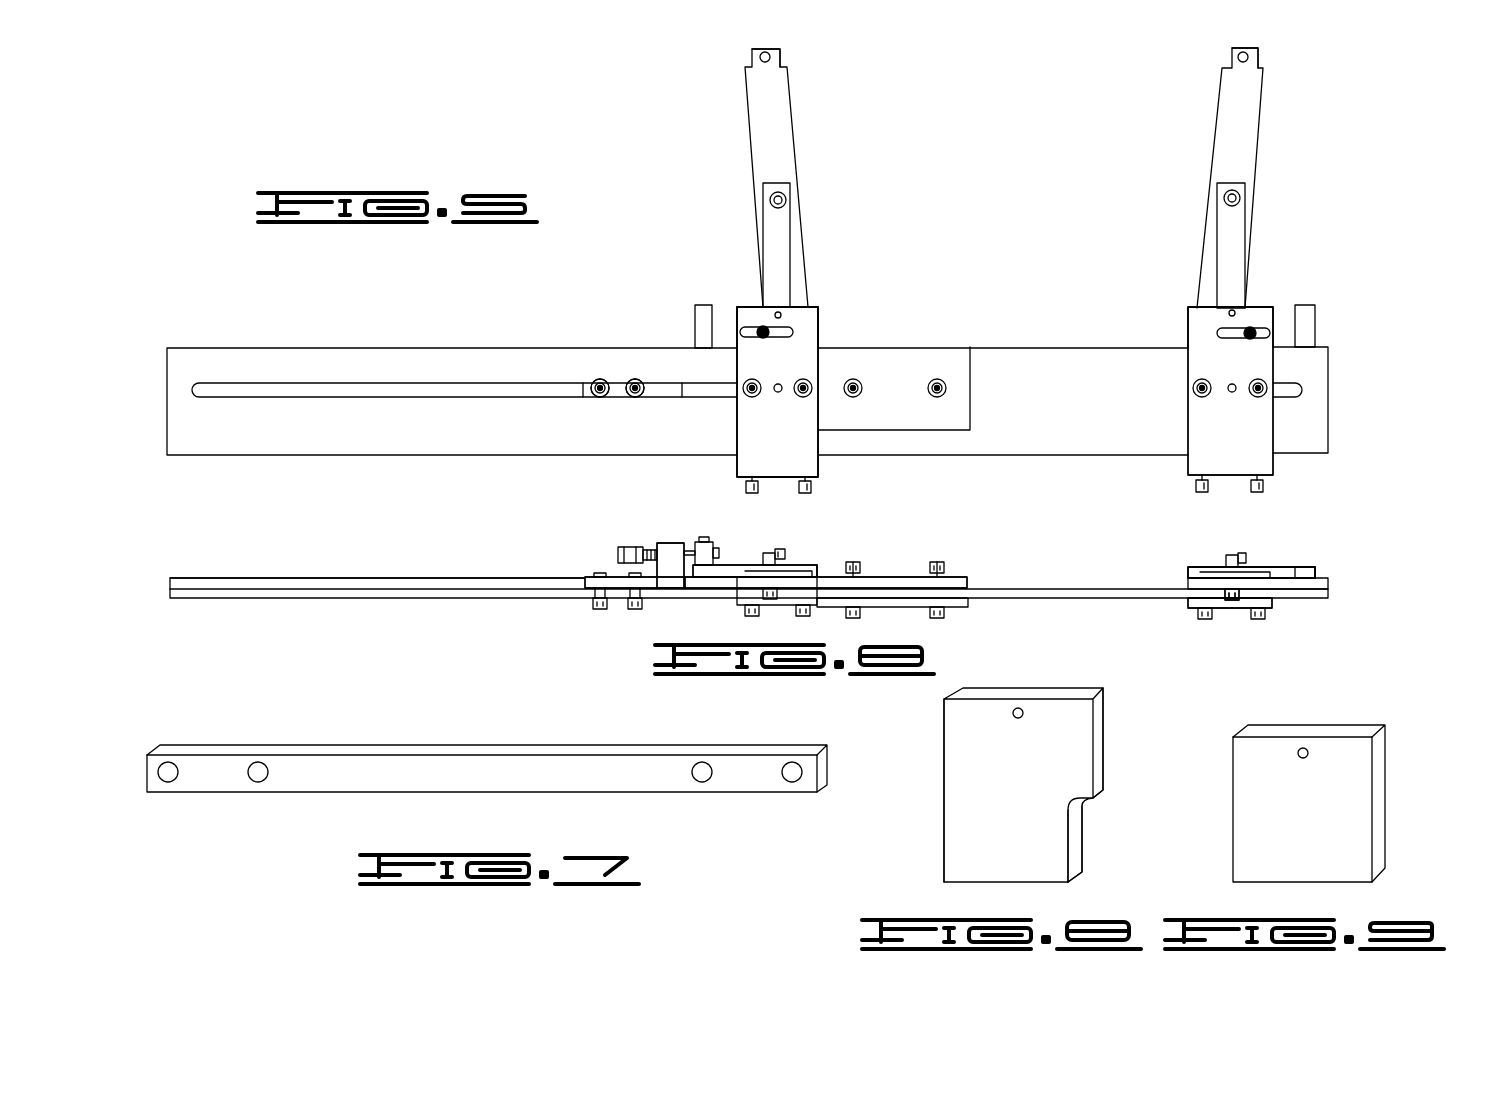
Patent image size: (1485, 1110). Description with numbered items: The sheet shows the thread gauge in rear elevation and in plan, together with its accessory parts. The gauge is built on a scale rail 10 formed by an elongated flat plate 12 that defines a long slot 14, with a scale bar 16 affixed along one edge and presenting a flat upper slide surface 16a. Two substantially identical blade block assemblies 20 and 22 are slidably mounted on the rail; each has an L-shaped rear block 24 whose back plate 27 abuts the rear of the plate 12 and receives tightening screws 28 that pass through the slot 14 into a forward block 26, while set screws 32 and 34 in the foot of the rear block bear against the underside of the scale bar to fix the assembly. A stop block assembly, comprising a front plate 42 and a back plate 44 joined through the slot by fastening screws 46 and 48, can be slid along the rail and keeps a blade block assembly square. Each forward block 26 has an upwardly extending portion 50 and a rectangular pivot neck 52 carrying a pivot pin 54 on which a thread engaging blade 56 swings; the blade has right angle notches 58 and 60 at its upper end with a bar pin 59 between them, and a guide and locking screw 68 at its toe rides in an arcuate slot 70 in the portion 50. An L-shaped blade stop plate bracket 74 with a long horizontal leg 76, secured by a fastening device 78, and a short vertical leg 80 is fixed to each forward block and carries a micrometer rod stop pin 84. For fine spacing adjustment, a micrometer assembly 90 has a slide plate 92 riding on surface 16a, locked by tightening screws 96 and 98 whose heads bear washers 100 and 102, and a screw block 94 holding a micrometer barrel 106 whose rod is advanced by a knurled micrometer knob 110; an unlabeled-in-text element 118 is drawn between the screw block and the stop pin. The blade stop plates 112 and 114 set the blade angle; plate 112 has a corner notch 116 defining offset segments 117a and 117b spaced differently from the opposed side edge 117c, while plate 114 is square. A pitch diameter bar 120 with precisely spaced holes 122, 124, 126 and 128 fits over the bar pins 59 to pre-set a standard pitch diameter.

In FIG. 5, the scale rail 10 is at (209, 345).
In FIG. 6, the scale rail 10 is at (214, 606).
In FIG. 5, the plate 12 is at (287, 434).
In FIG. 6, the plate 12 is at (392, 599).
In FIG. 5, the slot 14 is at (391, 390).
In FIG. 6, the scale bar 16 is at (442, 569).
In FIG. 6, the upper slide surface 16a is at (357, 577).
In FIG. 5, the blade block assembly 20 is at (1178, 467).
In FIG. 6, the blade block assembly 20 is at (1174, 603).
In FIG. 5, the blade block assembly 22 is at (833, 468).
In FIG. 5, the L-shaped rear block 24 is at (730, 467).
In FIG. 6, the forward block 26 is at (1188, 583).
In FIG. 5, the back plate 27 is at (768, 431).
In FIG. 6, the back plate 27 is at (1228, 608).
In FIG. 6, the tightening screws 28 is at (797, 616).
In FIG. 5, the set screw 32 is at (746, 488).
In FIG. 5, the set screw 34 is at (812, 488).
In FIG. 6, the front plate 42 is at (955, 577).
In FIG. 5, the back plate 44 is at (880, 403).
In FIG. 6, the back plate 44 is at (963, 607).
In FIG. 5, the fastening screw 46 is at (940, 379).
In FIG. 6, the fastening screw 46 is at (936, 561).
In FIG. 5, the fastening screw 48 is at (855, 379).
In FIG. 6, the fastening screw 48 is at (853, 561).
In FIG. 5, the upwardly extending portion 50 is at (818, 328).
In FIG. 5, the pivot neck 52 is at (778, 240).
In FIG. 5, the pivot pin 54 is at (784, 197).
In FIG. 6, the pivot pin 54 is at (1236, 600).
In FIG. 5, the thread engaging blade 56 is at (770, 104).
In FIG. 5, the right angle notch 58 is at (782, 60).
In FIG. 6, the bar pin 59 is at (769, 552).
In FIG. 5, the right angle notch 60 is at (750, 63).
In FIG. 5, the guide and locking screw 68 is at (760, 327).
In FIG. 5, the arcuate slot 70 is at (783, 338).
In FIG. 6, the blade stop plate bracket 74 is at (721, 558).
In FIG. 6, the horizontally extending leg 76 is at (740, 574).
In FIG. 6, the fastening device 78 is at (781, 548).
In FIG. 5, the vertically extending leg 80 is at (695, 317).
In FIG. 6, the vertically extending leg 80 is at (1306, 567).
In FIG. 6, the micrometer rod stop pin 84 is at (702, 541).
In FIG. 6, the micrometer assembly 90 is at (579, 572).
In FIG. 5, the slide plate 92 is at (671, 398).
In FIG. 6, the slide plate 92 is at (584, 589).
In FIG. 6, the screw block 94 is at (668, 580).
In FIG. 5, the tightening screw 96 is at (592, 396).
In FIG. 6, the tightening screw 96 is at (599, 611).
In FIG. 5, the tightening screw 98 is at (630, 397).
In FIG. 6, the tightening screw 98 is at (637, 611).
In FIG. 5, the washer 100 is at (593, 381).
In FIG. 5, the washer 102 is at (643, 381).
In FIG. 6, the micrometer barrel 106 is at (650, 548).
In FIG. 6, the knurled micrometer knob 110 is at (622, 547).
In FIG. 8, the blade stop plate 112 is at (1006, 762).
In FIG. 9, the blade stop plate 114 is at (1291, 812).
In FIG. 8, the notch 116 is at (1086, 822).
In FIG. 8, the first segment 117a is at (1075, 855).
In FIG. 8, the segment 117b is at (1098, 726).
In FIG. 8, the opposed side edge 117c is at (942, 800).
In FIG. 6, the drive shaft 118 is at (689, 550).
In FIG. 7, the pitch diameter bar 120 is at (465, 775).
In FIG. 7, the hole 122 is at (168, 783).
In FIG. 7, the hole 124 is at (258, 783).
In FIG. 7, the hole 126 is at (702, 783).
In FIG. 7, the hole 128 is at (792, 783).